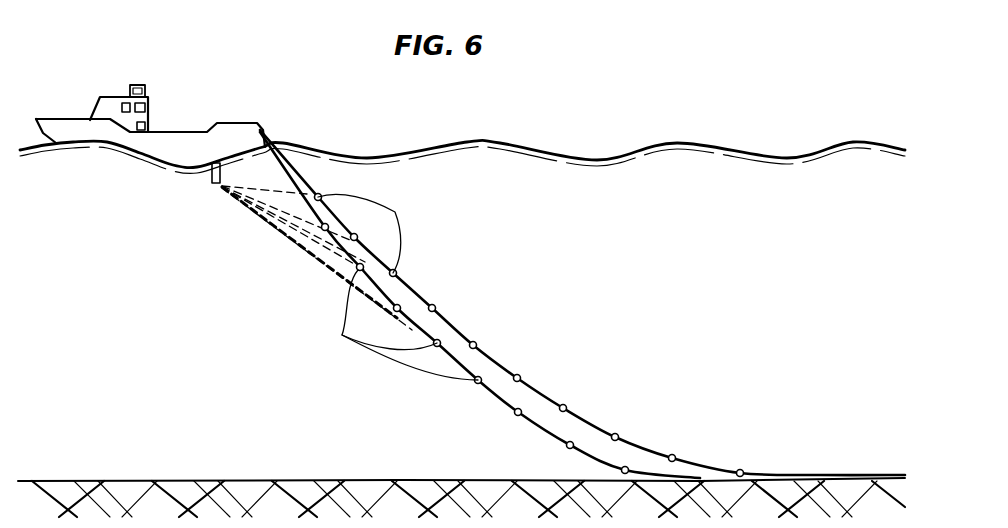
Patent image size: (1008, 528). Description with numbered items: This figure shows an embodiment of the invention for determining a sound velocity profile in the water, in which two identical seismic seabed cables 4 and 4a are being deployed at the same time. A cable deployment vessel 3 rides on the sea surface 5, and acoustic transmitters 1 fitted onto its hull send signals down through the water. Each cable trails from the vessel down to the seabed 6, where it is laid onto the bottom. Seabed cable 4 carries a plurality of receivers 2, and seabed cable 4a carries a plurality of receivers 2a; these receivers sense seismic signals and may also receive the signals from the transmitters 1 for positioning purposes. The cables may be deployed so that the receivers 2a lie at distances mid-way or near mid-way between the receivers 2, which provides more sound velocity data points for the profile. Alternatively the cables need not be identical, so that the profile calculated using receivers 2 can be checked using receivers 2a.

The acoustic transmitter 1 is at (211, 175).
The receivers 2 is at (395, 212).
The receivers 2a is at (342, 335).
The cable deployment vessel 3 is at (53, 119).
The seabed cable 4 is at (543, 392).
The seabed cable 4a is at (497, 396).
The sea surface 5 is at (668, 142).
The seabed 6 is at (143, 480).